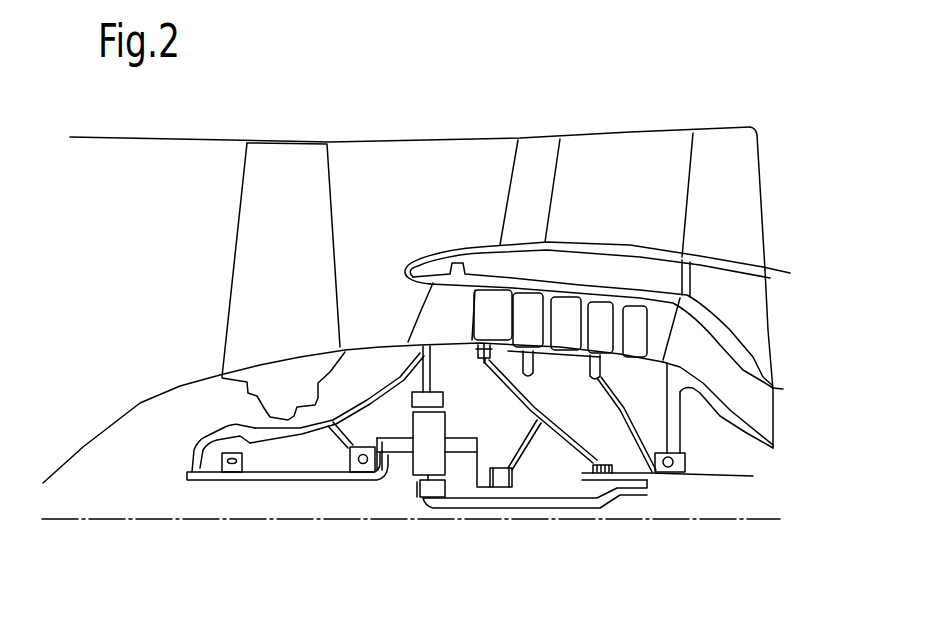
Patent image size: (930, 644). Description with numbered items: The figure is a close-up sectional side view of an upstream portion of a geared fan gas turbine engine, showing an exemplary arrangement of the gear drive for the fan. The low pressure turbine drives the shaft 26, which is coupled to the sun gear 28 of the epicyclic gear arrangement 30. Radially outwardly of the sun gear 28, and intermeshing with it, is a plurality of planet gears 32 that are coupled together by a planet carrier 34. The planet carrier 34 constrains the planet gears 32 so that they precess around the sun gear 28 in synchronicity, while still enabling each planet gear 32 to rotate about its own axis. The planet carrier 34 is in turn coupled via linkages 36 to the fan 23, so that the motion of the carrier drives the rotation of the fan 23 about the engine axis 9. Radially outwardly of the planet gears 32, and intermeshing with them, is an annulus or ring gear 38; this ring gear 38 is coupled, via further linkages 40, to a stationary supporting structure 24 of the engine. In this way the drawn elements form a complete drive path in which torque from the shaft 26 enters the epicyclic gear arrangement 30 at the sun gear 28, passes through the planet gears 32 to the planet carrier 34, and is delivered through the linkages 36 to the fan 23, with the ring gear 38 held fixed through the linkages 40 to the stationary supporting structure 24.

The engine axis 9 is at (197, 520).
The fan 23 is at (257, 297).
The stationary supporting structure 24 is at (440, 312).
The shaft 26 is at (652, 482).
The sun gear 28 is at (425, 498).
The epicyclic gear arrangement 30 is at (412, 465).
The planet gears 32 is at (428, 495).
The planet carrier 34 is at (471, 466).
The linkages 36 is at (370, 480).
The ring gear 38 is at (410, 402).
The linkages 40 is at (432, 367).